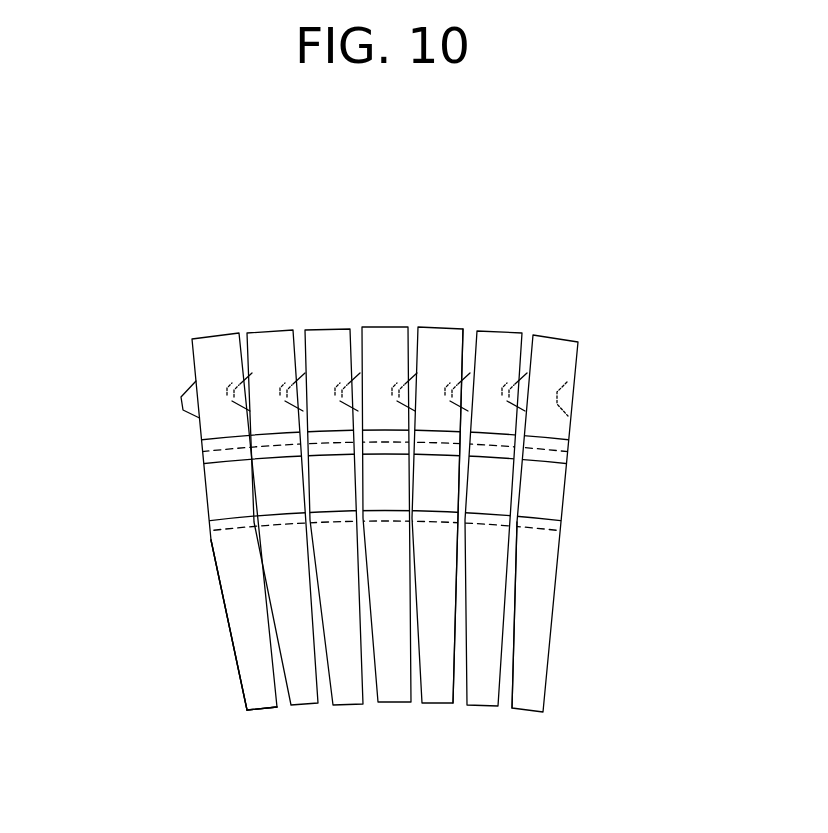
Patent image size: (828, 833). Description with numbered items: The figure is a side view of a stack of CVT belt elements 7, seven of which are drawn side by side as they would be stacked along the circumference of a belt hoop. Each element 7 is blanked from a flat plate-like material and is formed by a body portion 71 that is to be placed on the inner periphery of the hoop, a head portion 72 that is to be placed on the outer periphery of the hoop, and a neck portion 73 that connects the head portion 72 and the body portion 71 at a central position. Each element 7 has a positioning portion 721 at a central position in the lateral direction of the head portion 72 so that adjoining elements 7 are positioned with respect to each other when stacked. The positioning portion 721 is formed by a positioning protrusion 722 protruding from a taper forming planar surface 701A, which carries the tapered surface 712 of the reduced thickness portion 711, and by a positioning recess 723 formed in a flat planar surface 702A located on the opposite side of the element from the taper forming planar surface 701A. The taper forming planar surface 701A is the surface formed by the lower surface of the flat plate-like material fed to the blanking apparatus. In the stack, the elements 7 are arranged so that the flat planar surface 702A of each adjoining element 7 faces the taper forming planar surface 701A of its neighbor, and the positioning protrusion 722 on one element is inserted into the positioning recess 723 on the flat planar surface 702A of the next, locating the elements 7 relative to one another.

The CVT belt element 7 is at (505, 325).
The body portion 71 is at (233, 565).
The head portion 72 is at (218, 431).
The neck portion 73 is at (223, 488).
The reduced thickness portion 711 is at (255, 671).
The tapered surface 712 is at (230, 637).
The positioning portion 721 is at (178, 382).
The positioning protrusion 722 is at (348, 378).
The positioning recess 723 is at (385, 388).
The taper forming planar surface 701A is at (458, 547).
The flat planar surface 702A is at (513, 557).